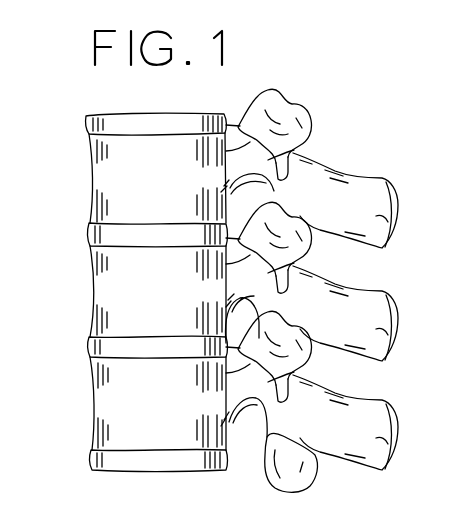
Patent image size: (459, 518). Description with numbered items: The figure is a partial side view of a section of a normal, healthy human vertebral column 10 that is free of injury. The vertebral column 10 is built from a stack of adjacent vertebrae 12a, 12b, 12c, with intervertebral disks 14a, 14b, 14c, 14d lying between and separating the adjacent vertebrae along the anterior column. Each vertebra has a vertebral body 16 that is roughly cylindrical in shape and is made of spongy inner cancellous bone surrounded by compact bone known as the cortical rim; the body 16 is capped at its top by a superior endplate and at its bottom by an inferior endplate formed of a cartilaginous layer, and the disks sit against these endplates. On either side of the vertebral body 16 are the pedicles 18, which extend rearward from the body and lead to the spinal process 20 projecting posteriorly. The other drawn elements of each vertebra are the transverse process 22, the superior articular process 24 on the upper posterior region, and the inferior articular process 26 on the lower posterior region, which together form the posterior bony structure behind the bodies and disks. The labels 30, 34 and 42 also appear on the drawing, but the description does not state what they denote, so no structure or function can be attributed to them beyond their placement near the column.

The vertebral column 10 is at (67, 148).
The vertebra 12a is at (88, 122).
The vertebra 12b is at (95, 286).
The vertebra 12c is at (92, 412).
The intervertebral disk 14a is at (157, 97).
The intervertebral disk 14b is at (88, 233).
The intervertebral disk 14c is at (90, 345).
The intervertebral disk 14d is at (90, 458).
The vertebral body 16 is at (166, 185).
The pedicle 18 is at (233, 130).
The spinal process 20 is at (336, 183).
The transverse process 22 is at (272, 160).
The superior articular process 24 is at (285, 104).
The inferior articular process 26 is at (303, 478).
The anterior side of spine 30 is at (458, 258).
The posterior side of spine 34 is at (458, 283).
The sacrum 42 is at (165, 517).